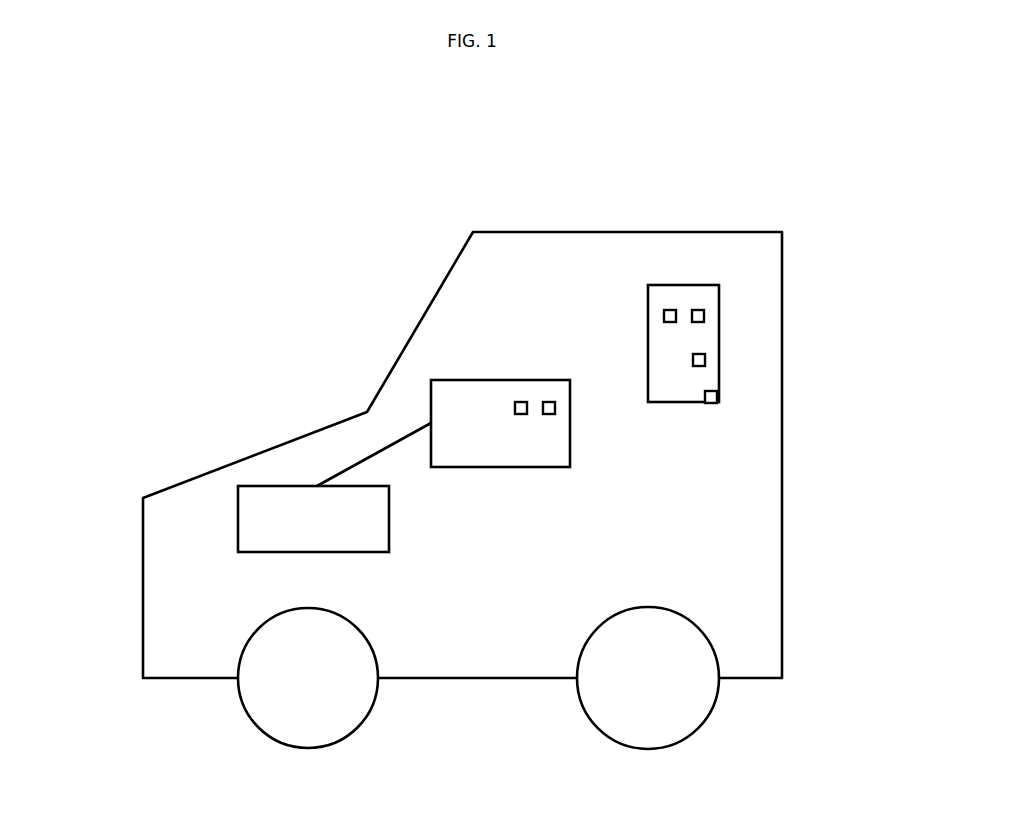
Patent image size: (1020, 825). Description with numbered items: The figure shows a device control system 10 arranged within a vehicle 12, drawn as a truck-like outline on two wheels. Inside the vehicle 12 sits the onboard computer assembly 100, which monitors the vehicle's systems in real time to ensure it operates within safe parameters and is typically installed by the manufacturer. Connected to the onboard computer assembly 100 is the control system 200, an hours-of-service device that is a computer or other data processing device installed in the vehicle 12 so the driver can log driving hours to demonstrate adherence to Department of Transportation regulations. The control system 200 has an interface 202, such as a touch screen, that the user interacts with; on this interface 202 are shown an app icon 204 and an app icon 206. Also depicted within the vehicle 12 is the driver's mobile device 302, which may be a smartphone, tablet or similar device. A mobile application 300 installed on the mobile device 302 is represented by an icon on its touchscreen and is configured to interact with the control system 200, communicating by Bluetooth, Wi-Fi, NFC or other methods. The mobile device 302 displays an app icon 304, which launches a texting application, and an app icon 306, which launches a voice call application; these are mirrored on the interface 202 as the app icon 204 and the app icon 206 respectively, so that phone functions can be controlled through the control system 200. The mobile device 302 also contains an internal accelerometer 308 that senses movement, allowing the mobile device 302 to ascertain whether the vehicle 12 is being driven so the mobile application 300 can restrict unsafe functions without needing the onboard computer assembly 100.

The system 10 is at (194, 284).
The vehicle 12 is at (518, 232).
The onboard computer assembly 100 is at (313, 519).
The control system 200 is at (476, 380).
The interface 202 is at (499, 434).
The app icon 204 is at (522, 401).
The app icon 206 is at (550, 401).
The mobile application 300 is at (706, 359).
The mobile device 302 is at (719, 339).
The app icon 304 is at (671, 310).
The app icon 306 is at (699, 310).
The accelerometer 308 is at (718, 397).